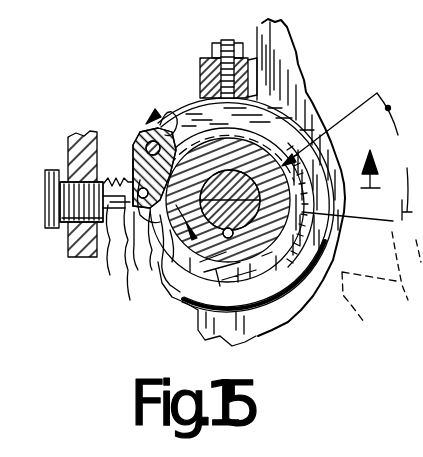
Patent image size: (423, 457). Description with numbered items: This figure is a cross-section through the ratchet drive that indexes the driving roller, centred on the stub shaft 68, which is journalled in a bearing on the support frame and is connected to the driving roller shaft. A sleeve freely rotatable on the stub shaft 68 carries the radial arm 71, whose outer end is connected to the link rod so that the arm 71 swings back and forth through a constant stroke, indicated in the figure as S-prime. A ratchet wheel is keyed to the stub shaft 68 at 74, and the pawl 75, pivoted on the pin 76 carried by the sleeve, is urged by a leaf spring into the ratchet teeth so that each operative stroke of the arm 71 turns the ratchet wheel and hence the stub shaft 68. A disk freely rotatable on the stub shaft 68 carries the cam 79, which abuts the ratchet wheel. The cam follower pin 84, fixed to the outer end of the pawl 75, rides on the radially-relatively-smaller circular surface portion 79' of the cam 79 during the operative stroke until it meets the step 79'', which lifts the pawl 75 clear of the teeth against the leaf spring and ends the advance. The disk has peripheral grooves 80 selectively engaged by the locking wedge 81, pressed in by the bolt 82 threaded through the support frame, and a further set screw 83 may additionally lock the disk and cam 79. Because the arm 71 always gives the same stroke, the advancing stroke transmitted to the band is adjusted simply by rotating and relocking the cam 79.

The stub shaft 68 is at (230, 225).
The radial arm 71 is at (357, 308).
The key 74 is at (182, 300).
The pawl 75 is at (133, 158).
The pin 76 is at (140, 158).
The cam 79 is at (289, 173).
The radially-relatively-smaller circular surface portion 79' is at (133, 270).
The step 79'' is at (161, 278).
The peripheral grooves 80 is at (152, 116).
The locking wedge 81 is at (118, 232).
The bolt 82 is at (60, 226).
The set screw 83 is at (233, 43).
The cam follower pin 84 is at (134, 245).